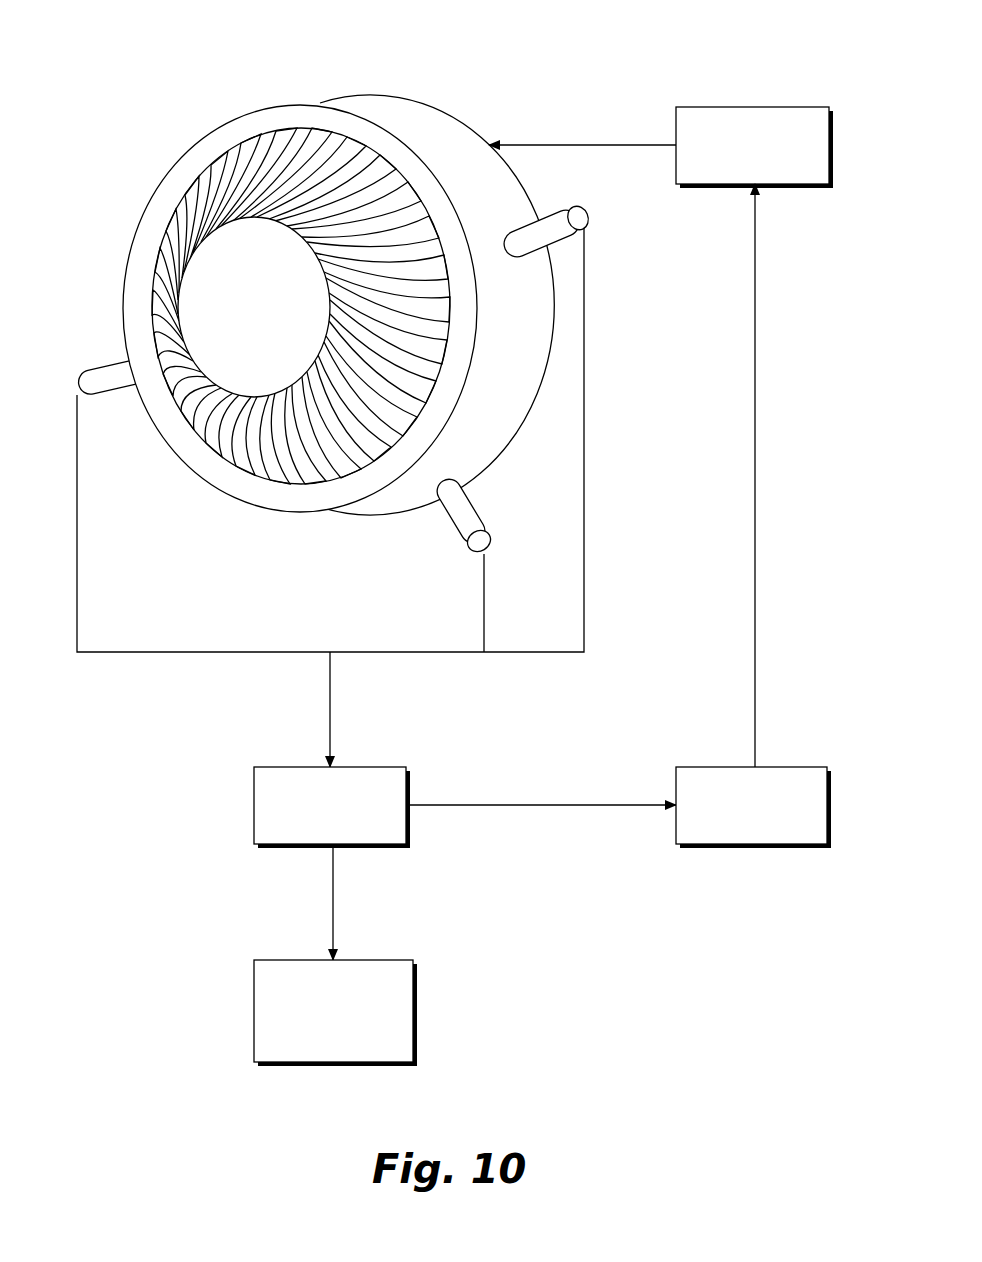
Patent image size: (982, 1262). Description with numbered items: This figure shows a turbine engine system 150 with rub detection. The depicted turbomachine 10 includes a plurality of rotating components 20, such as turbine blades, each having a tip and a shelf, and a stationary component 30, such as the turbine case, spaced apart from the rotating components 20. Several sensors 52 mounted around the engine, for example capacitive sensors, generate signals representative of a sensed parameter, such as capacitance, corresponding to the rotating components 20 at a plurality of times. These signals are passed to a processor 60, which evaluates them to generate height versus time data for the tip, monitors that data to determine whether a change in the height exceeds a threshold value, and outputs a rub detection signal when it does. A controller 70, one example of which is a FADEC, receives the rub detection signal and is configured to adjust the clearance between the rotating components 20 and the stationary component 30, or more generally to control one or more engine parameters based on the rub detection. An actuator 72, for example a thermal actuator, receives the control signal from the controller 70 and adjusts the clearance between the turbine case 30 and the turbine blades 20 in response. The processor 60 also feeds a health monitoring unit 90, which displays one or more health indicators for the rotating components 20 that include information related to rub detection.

The turbomachine 10 is at (172, 168).
The rotating component 20 is at (148, 302).
The stationary component 30 is at (410, 97).
The sensor 52 is at (97, 368).
The processor 60 is at (378, 767).
The controller 70 is at (800, 767).
The actuator 72 is at (800, 107).
The health monitoring unit 90 is at (385, 960).
The turbine engine system 150 is at (710, 422).